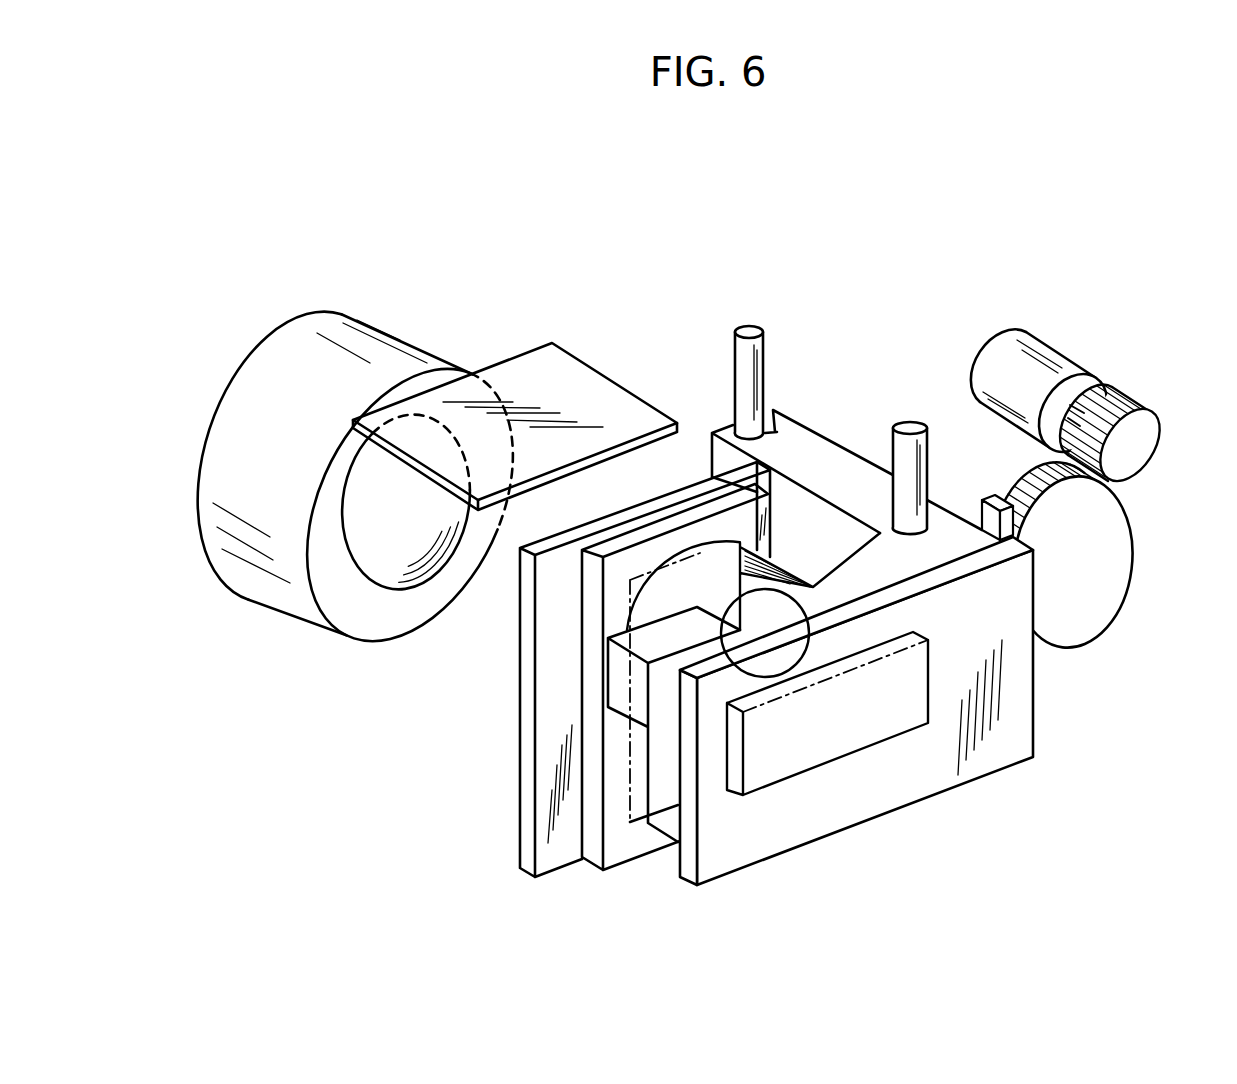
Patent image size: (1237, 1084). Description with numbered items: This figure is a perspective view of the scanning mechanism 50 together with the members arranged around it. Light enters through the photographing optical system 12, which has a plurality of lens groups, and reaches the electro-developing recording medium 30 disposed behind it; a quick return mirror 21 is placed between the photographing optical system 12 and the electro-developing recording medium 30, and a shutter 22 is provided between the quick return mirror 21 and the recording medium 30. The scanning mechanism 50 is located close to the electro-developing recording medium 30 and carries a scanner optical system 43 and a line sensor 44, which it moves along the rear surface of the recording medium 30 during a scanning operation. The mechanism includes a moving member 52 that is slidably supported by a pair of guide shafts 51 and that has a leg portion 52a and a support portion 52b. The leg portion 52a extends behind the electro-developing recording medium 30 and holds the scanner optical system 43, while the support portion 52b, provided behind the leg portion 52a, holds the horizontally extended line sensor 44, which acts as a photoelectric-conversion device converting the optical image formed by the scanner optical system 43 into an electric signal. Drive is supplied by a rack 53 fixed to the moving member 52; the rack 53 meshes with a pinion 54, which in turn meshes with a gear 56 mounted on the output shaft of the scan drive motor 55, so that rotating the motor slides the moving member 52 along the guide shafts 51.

The photographing optical system 12 is at (308, 366).
The quick return mirror 21 is at (537, 368).
The shutter 22 is at (525, 845).
The electro-developing recording medium 30 is at (597, 868).
The scanner optical system 43 is at (705, 583).
The line sensor 44 is at (900, 737).
The scanning mechanism 50 is at (955, 435).
The guide shafts 51 is at (906, 426).
The moving member 52 is at (760, 722).
The leg portion 52a is at (612, 697).
The support portion 52b is at (733, 850).
The rack 53 is at (993, 518).
The pinion 54 is at (1087, 573).
The scan drive motor 55 is at (1030, 365).
The gear 56 is at (1142, 438).